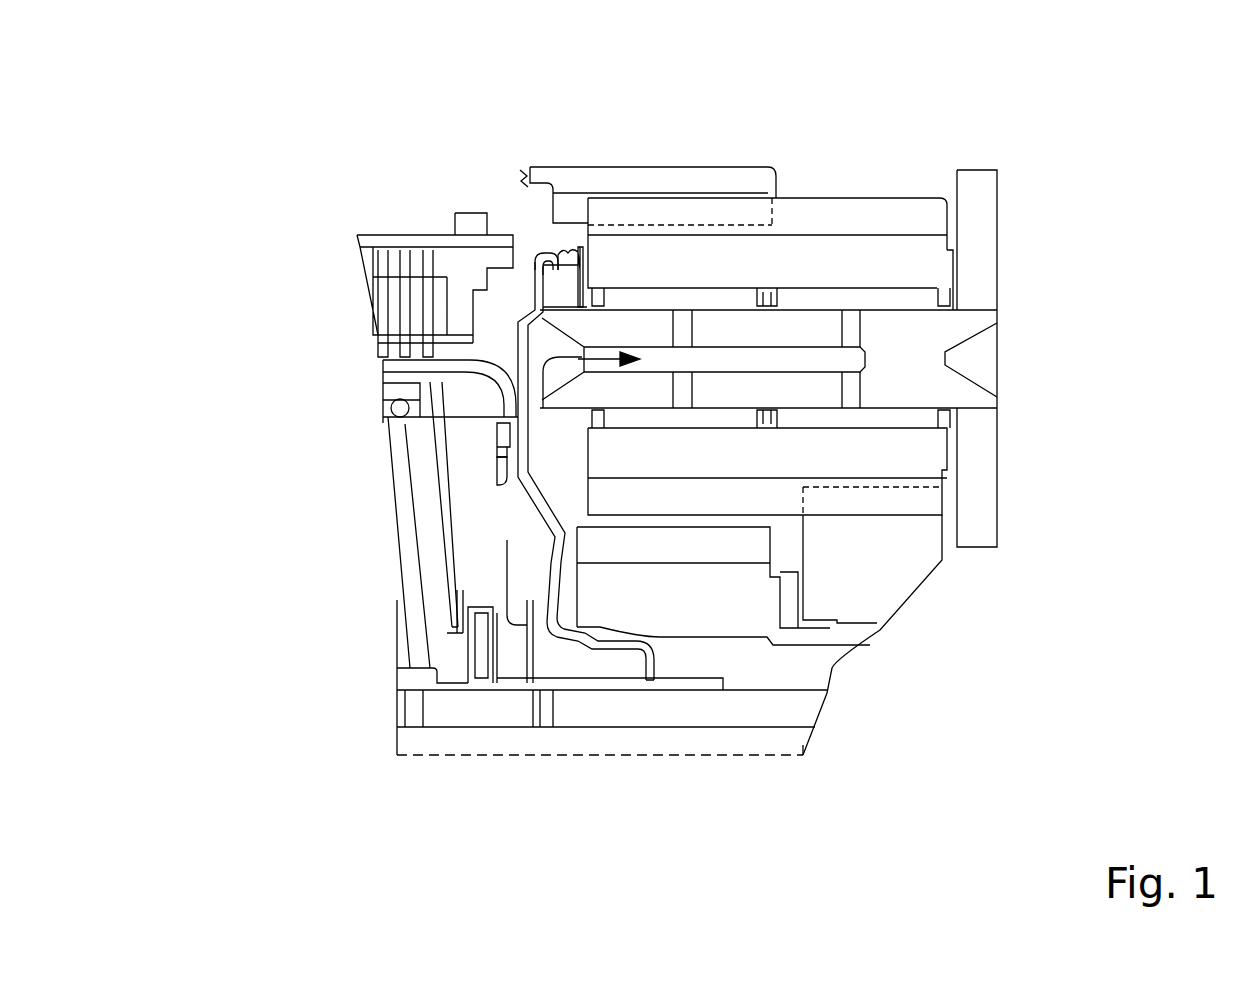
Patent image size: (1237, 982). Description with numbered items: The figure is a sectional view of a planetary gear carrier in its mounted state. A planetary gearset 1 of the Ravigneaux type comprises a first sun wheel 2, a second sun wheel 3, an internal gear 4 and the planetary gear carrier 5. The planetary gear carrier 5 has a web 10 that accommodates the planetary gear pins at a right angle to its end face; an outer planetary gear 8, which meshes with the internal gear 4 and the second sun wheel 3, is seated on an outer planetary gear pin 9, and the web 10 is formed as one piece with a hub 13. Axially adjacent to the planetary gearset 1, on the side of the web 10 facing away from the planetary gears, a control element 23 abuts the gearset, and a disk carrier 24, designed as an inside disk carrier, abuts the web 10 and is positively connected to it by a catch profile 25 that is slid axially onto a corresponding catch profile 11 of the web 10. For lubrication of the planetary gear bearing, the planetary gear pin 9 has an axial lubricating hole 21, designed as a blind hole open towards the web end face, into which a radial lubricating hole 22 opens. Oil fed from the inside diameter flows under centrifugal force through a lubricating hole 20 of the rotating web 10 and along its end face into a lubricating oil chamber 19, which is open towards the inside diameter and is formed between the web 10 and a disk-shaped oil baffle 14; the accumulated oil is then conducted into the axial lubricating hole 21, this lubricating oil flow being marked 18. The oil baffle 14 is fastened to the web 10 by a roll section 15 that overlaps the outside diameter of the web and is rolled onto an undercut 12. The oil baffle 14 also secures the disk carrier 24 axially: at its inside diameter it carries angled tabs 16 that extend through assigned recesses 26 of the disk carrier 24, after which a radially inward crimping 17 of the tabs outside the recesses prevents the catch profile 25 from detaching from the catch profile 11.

The planetary gearset 1 is at (848, 178).
The first sun wheel 2 is at (723, 600).
The second sun wheel 3 is at (877, 558).
The internal gear 4 is at (710, 180).
The planetary gear carrier 5 is at (1020, 257).
The outer planetary gear 8 is at (776, 263).
The outer planetary gear pin 9 is at (822, 325).
The web 10 is at (517, 500).
The catch profile 11 is at (503, 447).
The undercut 12 is at (562, 232).
The hub 13 is at (610, 667).
The oil baffle 14 is at (513, 350).
The roll section 15 is at (532, 236).
The angled tab 16 is at (378, 364).
The crimping 17 is at (476, 421).
The lubricating oil flow 18 is at (653, 648).
The lubricating oil chamber 19 is at (532, 346).
The lubricating hole 20 is at (527, 600).
The axial lubricating hole 21 is at (843, 358).
The radial lubricating hole 22 is at (683, 318).
The control element 23 is at (378, 213).
The disk carrier 24 is at (373, 358).
The catch profile 25 is at (517, 470).
The recess 26 is at (495, 475).